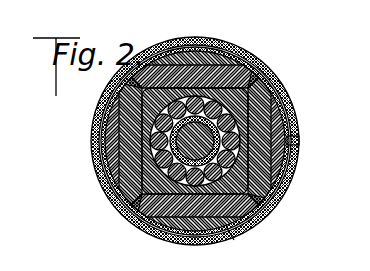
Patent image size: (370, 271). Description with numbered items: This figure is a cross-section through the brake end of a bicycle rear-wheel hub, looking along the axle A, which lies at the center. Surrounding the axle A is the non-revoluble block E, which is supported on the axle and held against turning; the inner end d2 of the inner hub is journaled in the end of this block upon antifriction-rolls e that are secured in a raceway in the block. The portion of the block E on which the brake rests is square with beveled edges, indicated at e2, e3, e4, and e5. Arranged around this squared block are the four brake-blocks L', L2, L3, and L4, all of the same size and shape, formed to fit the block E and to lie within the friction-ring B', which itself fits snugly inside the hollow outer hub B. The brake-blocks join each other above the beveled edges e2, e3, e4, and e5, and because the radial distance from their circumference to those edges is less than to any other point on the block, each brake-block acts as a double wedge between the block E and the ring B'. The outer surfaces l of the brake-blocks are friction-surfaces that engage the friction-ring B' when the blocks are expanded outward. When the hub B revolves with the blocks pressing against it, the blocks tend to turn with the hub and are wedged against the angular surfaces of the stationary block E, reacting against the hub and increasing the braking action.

The axle A is at (128, 161).
The hollow outer hub B is at (215, 141).
The friction-ring B' is at (213, 141).
The inner end of inner hub d2 is at (293, 152).
The block E is at (230, 98).
The antifriction-rolls e is at (295, 132).
The beveled edge e2 is at (236, 84).
The beveled edge e3 is at (243, 214).
The beveled edge e4 is at (129, 193).
The beveled edge e5 is at (144, 86).
The brake-block L' is at (195, 127).
The brake-block L2 is at (272, 189).
The brake-block L3 is at (147, 208).
The brake-block L4 is at (110, 151).
The outer surface of brake-block l is at (224, 228).